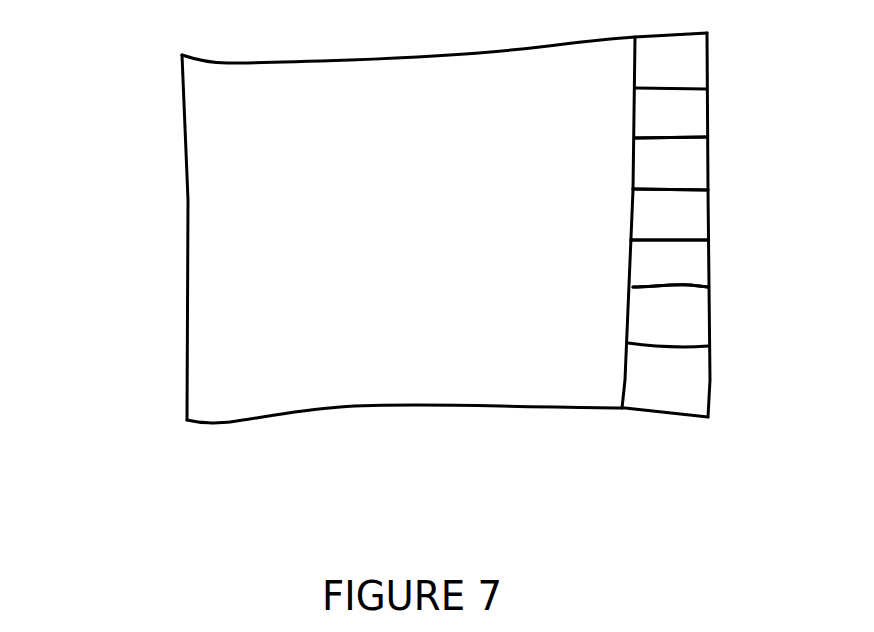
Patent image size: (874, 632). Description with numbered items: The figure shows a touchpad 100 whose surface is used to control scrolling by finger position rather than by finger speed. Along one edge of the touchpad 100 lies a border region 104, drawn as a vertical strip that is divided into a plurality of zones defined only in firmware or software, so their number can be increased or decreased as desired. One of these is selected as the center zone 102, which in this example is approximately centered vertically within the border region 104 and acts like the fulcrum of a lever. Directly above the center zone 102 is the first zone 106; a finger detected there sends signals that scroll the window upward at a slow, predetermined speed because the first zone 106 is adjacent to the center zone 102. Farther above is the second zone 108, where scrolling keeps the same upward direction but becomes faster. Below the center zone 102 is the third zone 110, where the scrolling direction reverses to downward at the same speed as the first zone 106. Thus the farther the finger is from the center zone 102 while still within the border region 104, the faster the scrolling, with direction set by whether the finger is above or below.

The touchpad 100 is at (202, 335).
The center zone 102 is at (698, 205).
The border region 104 is at (700, 438).
The first zone 106 is at (697, 160).
The second zone 108 is at (698, 118).
The third zone 110 is at (697, 262).